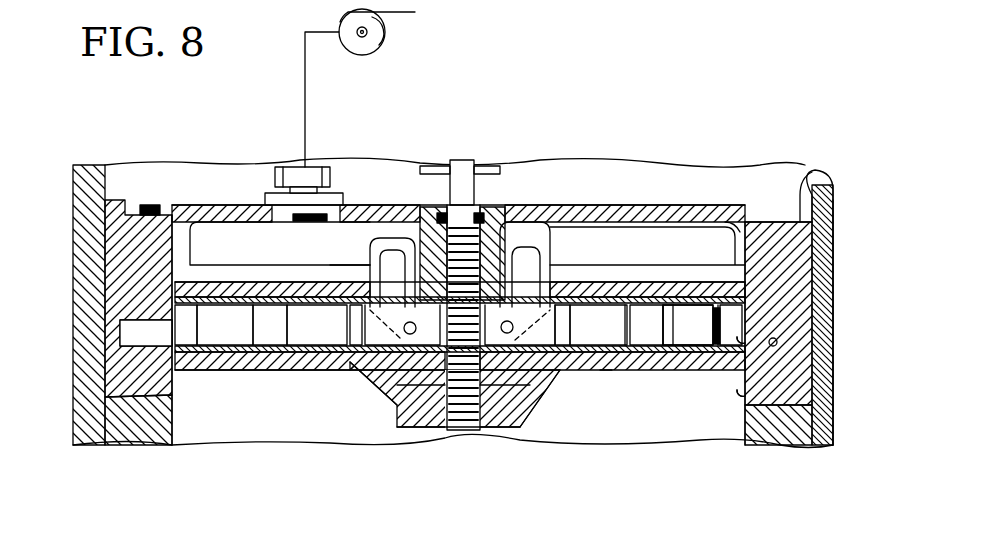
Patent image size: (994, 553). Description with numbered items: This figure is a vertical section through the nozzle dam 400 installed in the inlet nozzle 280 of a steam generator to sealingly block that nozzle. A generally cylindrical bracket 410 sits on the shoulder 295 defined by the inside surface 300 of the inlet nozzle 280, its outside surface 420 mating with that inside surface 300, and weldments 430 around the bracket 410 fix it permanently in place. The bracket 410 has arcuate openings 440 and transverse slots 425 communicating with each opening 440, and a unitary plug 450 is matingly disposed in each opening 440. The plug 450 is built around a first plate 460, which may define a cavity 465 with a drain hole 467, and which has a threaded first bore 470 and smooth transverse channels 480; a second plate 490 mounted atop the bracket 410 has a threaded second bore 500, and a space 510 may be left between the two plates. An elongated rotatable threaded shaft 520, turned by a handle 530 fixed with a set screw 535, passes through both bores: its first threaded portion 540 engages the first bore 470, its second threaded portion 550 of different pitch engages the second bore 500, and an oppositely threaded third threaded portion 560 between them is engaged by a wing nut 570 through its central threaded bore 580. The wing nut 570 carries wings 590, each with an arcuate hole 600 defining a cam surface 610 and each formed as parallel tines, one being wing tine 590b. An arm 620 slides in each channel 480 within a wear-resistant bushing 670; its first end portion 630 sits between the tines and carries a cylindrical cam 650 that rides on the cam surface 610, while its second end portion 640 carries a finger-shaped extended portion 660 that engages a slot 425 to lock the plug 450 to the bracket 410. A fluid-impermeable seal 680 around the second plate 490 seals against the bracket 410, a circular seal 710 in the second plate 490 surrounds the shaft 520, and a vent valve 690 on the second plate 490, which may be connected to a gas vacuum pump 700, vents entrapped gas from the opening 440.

The inlet nozzle 280 is at (120, 430).
The shoulder 295 is at (810, 440).
The inside surface 300 is at (112, 266).
The nozzle dam 400 is at (662, 140).
The bracket 410 is at (745, 250).
The outside surface 420 is at (833, 247).
The slots 425 is at (800, 340).
The weldments 430 is at (806, 182).
The openings 440 is at (812, 387).
The plug 450 is at (762, 185).
The first plate 460 is at (266, 362).
The cavity 465 is at (350, 372).
The drain hole 467 is at (397, 416).
The first bore 470 is at (414, 440).
The channels 480 is at (625, 352).
The second plate 490 is at (688, 206).
The second bore 500 is at (380, 260).
The space 510 is at (252, 232).
The threaded shaft 520 is at (468, 201).
The handle 530 is at (500, 160).
The set screw 535 is at (460, 158).
The first threaded portion 540 is at (465, 432).
The second threaded portion 550 is at (394, 212).
The third threaded portion 560 is at (435, 354).
The wing nut 570 is at (538, 226).
The threaded bore 580 is at (348, 320).
The wings 590 is at (566, 206).
The wing tine 590b is at (558, 261).
The hole 600 is at (350, 243).
The cam surface 610 is at (572, 322).
The arm 620 is at (680, 318).
The first end portion 630 is at (558, 373).
The second end portion 640 is at (673, 348).
The cam 650 is at (519, 352).
The extended portion 660 is at (718, 348).
The bushing 670 is at (604, 372).
The seal 680 is at (148, 206).
The vent valve 690 is at (292, 160).
The gas vacuum pump 700 is at (376, 52).
The circular seal 710 is at (432, 210).